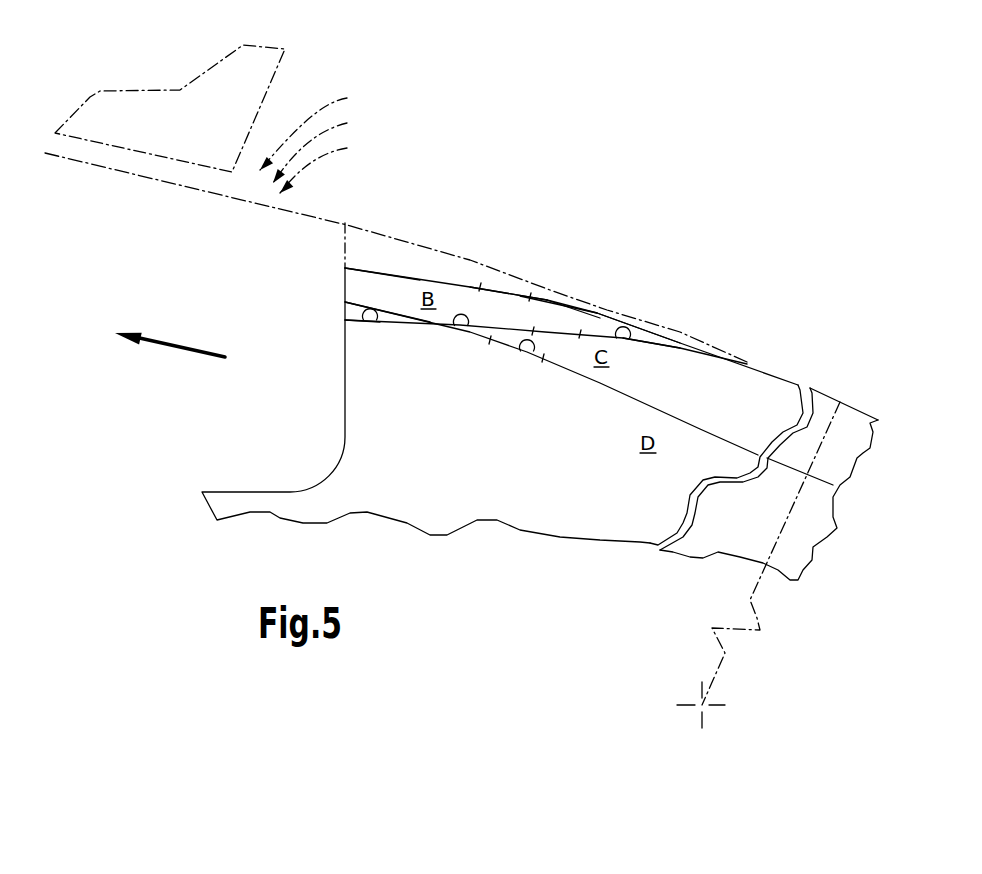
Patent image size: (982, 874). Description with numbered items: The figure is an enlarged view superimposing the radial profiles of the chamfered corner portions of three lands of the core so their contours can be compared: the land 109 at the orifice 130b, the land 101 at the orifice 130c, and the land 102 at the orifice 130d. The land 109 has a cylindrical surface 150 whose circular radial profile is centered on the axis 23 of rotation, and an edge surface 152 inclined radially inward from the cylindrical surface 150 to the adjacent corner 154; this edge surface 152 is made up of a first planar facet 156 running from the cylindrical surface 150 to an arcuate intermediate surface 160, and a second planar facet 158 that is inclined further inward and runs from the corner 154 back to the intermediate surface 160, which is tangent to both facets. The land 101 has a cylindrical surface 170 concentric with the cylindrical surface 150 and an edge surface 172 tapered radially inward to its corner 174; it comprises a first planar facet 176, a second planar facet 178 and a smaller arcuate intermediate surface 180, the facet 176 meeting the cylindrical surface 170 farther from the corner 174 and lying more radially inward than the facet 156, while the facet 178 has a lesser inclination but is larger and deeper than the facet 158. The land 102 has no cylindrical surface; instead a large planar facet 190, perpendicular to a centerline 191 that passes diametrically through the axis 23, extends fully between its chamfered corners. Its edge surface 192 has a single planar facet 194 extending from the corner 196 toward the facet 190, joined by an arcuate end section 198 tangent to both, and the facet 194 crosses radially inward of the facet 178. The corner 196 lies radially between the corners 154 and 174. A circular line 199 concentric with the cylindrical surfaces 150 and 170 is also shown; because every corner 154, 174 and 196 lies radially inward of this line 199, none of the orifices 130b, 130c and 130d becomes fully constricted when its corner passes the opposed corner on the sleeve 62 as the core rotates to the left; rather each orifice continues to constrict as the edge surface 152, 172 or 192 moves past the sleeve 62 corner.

The sleeve 62 is at (263, 102).
The orifice 130b is at (329, 129).
The orifice 130c is at (334, 147).
The orifice 130d is at (339, 164).
The circular line 199 is at (302, 212).
The corner 154 is at (345, 268).
The land 109 is at (355, 288).
The corner 196 is at (347, 304).
The land 102 is at (350, 311).
The corner 174 is at (347, 325).
The land 101 is at (350, 347).
The second planar facet 178 is at (373, 327).
The planar facet 194 is at (449, 332).
The arcuate end section 198 is at (522, 357).
The first planar facet 176 is at (629, 340).
The second planar facet 158 is at (383, 272).
The edge surface 192 is at (392, 290).
The arcuate intermediate surface 160 is at (503, 288).
The edge surface 152 is at (549, 282).
The arcuate intermediate surface 180 is at (560, 300).
The first planar facet 156 is at (603, 300).
The edge surface 172 is at (650, 333).
The cylindrical surface 150 is at (785, 377).
The cylindrical surface 170 is at (867, 413).
The planar facet 190 is at (718, 434).
The centerline 191 is at (785, 527).
The axis of rotation 23 is at (702, 705).